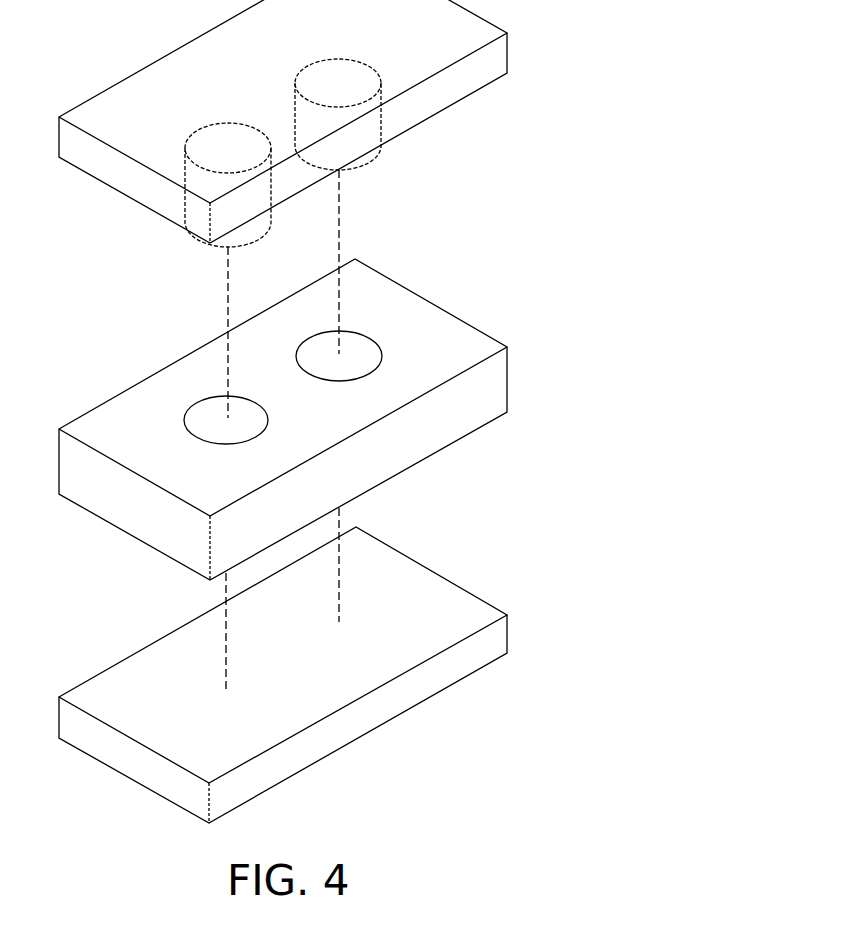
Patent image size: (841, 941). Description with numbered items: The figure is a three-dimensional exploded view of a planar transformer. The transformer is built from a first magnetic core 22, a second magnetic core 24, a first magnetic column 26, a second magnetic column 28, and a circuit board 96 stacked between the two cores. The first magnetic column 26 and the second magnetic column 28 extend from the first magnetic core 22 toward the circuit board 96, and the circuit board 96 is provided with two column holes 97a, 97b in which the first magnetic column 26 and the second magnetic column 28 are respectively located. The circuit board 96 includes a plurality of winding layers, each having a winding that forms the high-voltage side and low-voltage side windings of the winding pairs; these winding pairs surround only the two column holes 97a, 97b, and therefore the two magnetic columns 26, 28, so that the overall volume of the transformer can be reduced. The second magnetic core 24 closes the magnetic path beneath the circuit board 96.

The first magnetic core 22 is at (416, 114).
The second magnetic core 24 is at (465, 606).
The first magnetic column 26 is at (254, 236).
The second magnetic column 28 is at (354, 167).
The circuit board 96 is at (139, 398).
The column hole 97a is at (203, 400).
The column hole 97b is at (317, 334).